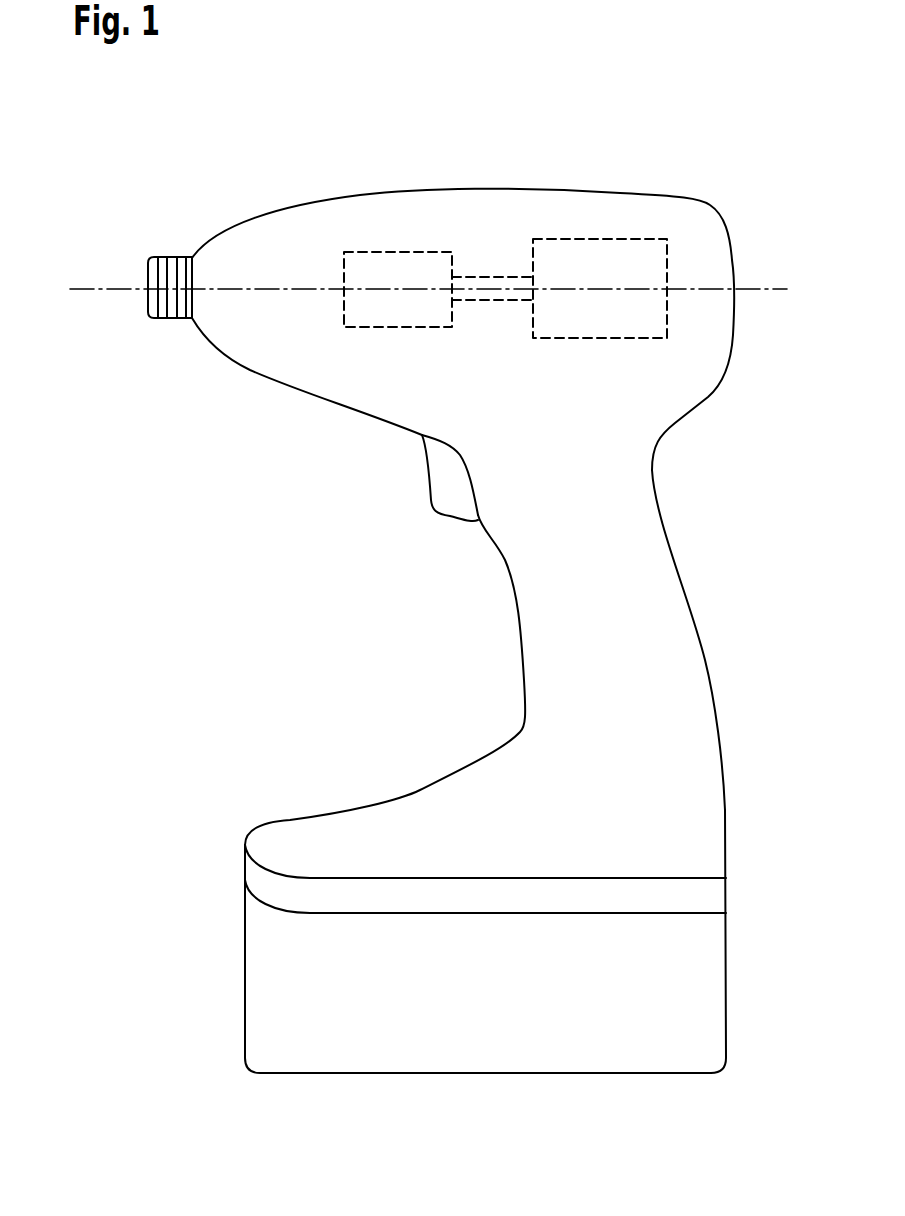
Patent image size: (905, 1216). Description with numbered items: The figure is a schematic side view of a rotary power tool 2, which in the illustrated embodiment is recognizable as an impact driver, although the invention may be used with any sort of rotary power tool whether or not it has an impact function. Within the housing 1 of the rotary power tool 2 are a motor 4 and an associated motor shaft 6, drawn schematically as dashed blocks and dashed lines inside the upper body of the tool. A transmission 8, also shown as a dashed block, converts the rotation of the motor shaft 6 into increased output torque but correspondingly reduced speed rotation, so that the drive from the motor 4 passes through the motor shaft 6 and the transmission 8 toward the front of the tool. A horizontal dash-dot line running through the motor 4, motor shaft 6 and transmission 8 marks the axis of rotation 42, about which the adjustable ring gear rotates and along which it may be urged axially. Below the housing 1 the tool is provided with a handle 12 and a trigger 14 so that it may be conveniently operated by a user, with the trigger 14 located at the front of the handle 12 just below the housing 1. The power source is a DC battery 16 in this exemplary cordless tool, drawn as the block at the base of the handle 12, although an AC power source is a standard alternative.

The housing 1 is at (428, 222).
The rotary power tool 2 is at (646, 107).
The motor 4 is at (590, 258).
The motor shaft 6 is at (493, 280).
The transmission 8 is at (370, 263).
The handle 12 is at (642, 578).
The trigger 14 is at (445, 480).
The DC battery 16 is at (657, 978).
The axis of rotation 42 is at (103, 288).